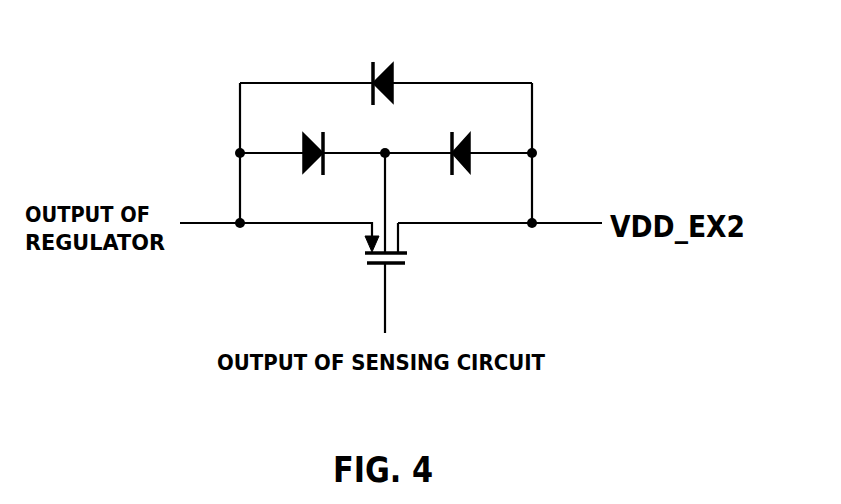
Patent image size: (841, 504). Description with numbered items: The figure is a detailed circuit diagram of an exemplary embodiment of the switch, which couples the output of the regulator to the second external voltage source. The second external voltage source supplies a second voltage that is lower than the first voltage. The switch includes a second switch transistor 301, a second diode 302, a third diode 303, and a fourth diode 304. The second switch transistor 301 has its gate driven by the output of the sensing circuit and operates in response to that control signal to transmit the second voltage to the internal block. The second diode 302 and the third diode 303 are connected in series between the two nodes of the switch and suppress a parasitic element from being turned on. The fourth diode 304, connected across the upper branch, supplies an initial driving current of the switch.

The second switch transistor M2 301 is at (395, 277).
The second diode D1 302 is at (327, 139).
The third diode D2 303 is at (480, 137).
The fourth diode D3 304 is at (415, 60).